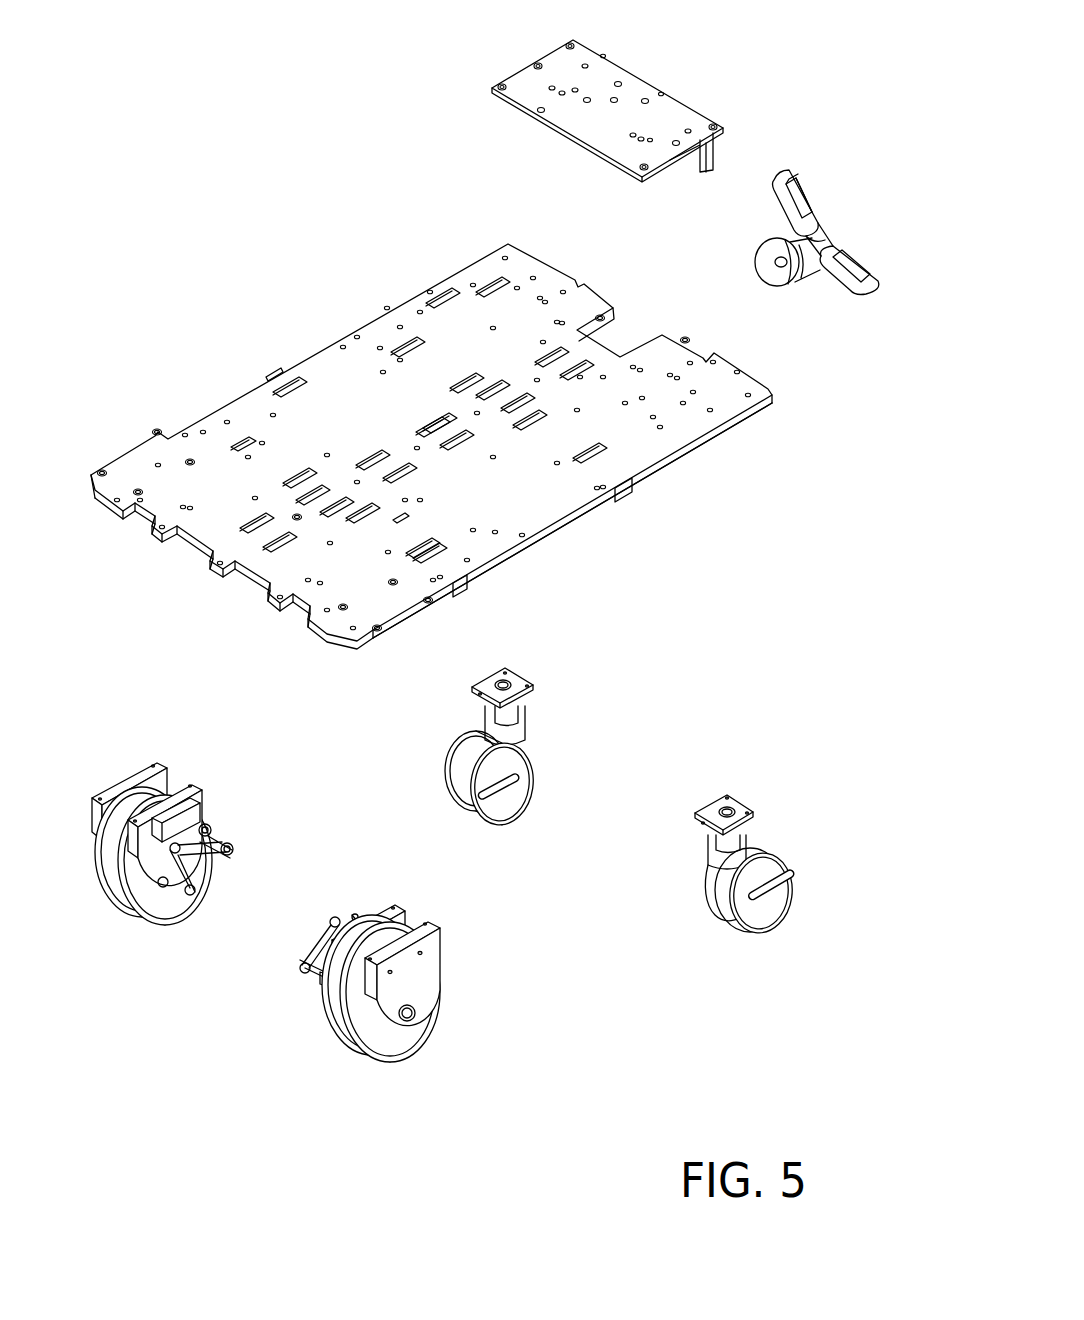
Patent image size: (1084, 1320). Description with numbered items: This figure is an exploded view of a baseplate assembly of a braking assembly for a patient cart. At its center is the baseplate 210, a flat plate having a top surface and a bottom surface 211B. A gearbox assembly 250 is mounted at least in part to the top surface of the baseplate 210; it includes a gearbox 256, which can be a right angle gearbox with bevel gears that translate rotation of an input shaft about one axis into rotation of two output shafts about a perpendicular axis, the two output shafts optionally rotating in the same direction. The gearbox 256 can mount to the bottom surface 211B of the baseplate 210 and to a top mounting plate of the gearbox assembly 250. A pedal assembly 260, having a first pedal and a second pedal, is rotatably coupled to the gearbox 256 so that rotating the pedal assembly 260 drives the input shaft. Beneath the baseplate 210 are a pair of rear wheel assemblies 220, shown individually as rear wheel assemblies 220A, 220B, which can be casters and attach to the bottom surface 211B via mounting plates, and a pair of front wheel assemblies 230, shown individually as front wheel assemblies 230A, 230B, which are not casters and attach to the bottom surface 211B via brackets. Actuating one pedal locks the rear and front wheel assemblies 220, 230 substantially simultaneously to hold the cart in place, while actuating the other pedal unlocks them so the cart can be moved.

The baseplate 210 is at (438, 446).
The bottom surface 211B is at (566, 552).
The gearbox assembly 250 is at (560, 150).
The gearbox 256 is at (582, 177).
The pedal assembly 260 is at (861, 207).
The rear wheel assemblies 220 is at (622, 844).
The rear wheel assembly 220A is at (763, 962).
The rear wheel assembly 220B is at (502, 855).
The front wheel assemblies 230 is at (259, 962).
The front wheel assembly 230A is at (355, 1099).
The front wheel assembly 230B is at (115, 959).